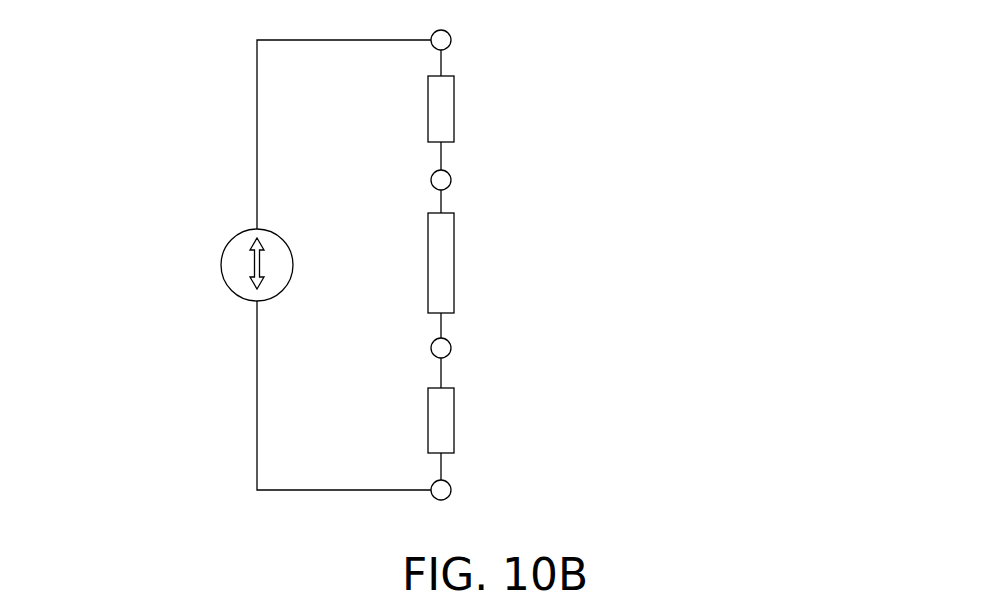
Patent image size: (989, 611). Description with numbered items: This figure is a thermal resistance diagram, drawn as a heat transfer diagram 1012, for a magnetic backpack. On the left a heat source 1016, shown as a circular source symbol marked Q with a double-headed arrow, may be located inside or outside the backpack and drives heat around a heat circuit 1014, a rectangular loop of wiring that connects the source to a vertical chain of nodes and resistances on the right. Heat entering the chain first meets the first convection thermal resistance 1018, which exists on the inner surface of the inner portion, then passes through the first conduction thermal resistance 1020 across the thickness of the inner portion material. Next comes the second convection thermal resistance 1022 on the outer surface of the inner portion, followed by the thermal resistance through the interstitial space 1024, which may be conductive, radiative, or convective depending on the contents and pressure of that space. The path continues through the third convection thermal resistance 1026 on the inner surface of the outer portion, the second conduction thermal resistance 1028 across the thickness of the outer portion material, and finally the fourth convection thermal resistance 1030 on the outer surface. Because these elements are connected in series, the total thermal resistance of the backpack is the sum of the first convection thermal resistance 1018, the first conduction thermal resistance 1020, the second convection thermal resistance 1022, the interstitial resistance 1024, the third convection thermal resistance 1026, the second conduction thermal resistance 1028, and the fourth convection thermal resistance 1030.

The heat transfer diagram 1012 is at (863, 400).
The heat circuit 1014 is at (253, 145).
The heat source 1016 is at (222, 250).
The first convection thermal resistance 1018 is at (451, 35).
The first conduction thermal resistance 1020 is at (454, 99).
The second convection thermal resistance 1022 is at (451, 178).
The thermal resistance through the interstitial space 1024 is at (454, 255).
The third convection thermal resistance 1026 is at (451, 348).
The second conduction thermal resistance 1028 is at (454, 404).
The fourth convection thermal resistance 1030 is at (451, 488).